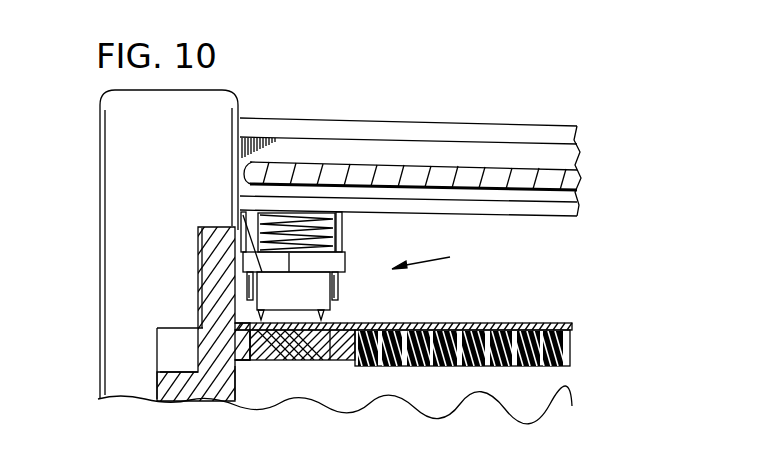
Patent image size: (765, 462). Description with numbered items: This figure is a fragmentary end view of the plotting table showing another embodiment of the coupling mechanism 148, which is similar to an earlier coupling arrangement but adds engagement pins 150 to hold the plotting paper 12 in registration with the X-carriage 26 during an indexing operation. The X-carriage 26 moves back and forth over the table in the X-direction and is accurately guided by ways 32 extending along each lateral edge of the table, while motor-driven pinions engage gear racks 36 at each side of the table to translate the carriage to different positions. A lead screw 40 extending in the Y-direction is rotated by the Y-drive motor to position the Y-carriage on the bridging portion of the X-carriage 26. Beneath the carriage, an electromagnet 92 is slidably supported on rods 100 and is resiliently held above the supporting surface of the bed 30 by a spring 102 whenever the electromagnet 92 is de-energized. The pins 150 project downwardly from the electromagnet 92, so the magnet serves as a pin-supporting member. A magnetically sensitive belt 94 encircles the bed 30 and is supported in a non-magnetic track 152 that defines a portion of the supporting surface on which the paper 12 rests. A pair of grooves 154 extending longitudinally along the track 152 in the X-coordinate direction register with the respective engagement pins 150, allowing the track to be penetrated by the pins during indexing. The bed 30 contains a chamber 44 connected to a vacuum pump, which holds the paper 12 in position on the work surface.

The plotting paper 12 is at (549, 333).
The X-carriage 26 is at (327, 126).
The table bed 30 is at (572, 352).
The ways 32 is at (205, 247).
The gear racks 36 is at (168, 335).
The lead screw 40 is at (574, 187).
The chamber 44 is at (558, 394).
The electromagnet 92 is at (345, 270).
The magnetically sensitive belt 94 is at (288, 350).
The rods 100 is at (342, 222).
The spring 102 is at (343, 237).
The coupling mechanism 148 is at (440, 256).
The engagement pins 150 is at (257, 316).
The non-magnetic track 152 is at (262, 362).
The grooves 154 is at (252, 333).